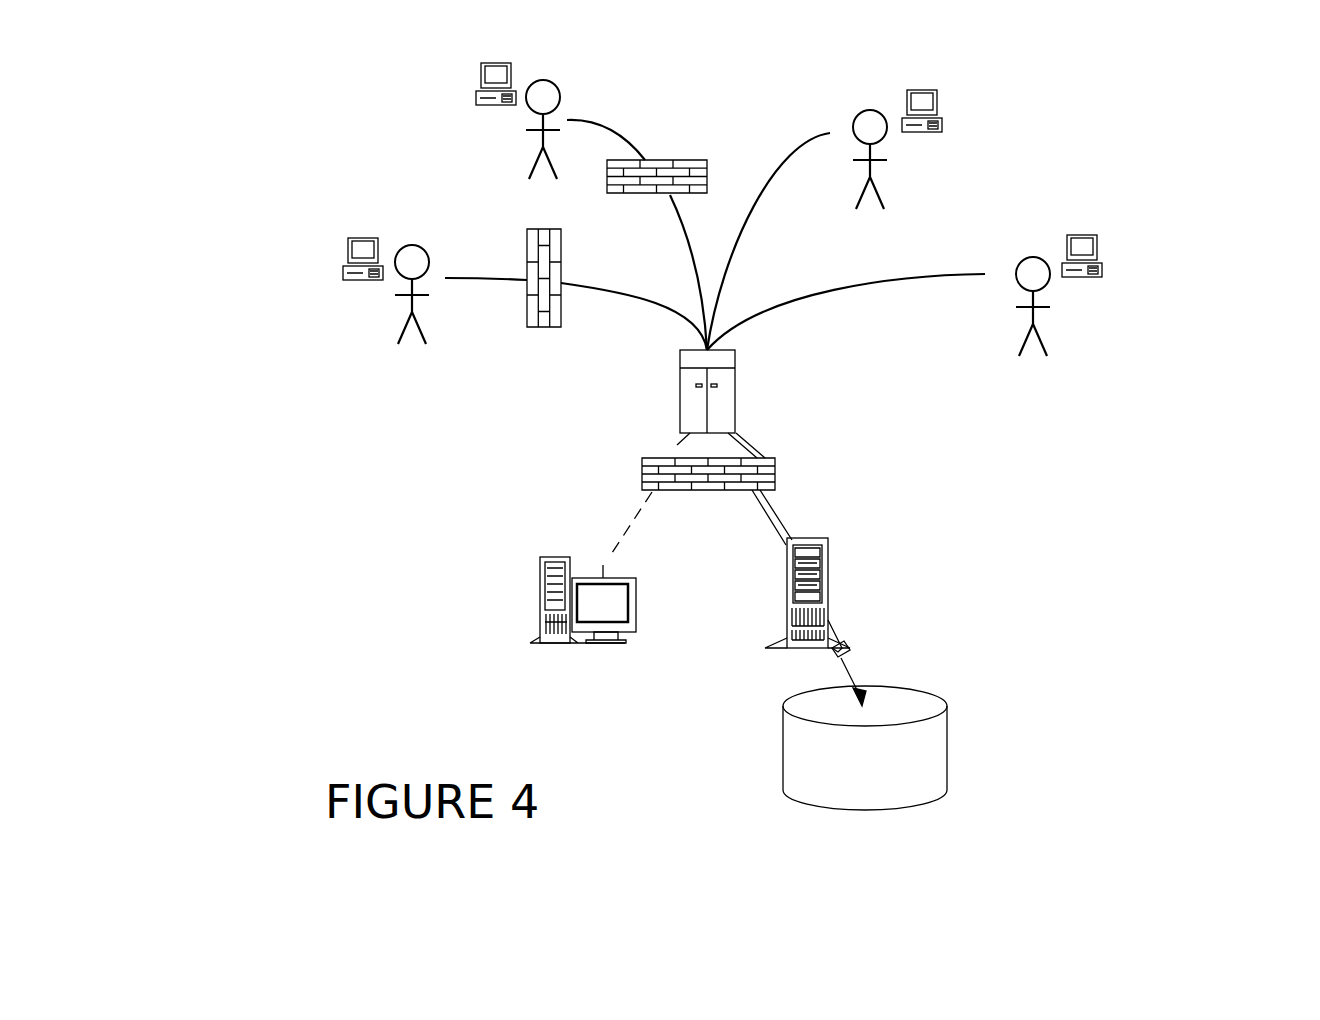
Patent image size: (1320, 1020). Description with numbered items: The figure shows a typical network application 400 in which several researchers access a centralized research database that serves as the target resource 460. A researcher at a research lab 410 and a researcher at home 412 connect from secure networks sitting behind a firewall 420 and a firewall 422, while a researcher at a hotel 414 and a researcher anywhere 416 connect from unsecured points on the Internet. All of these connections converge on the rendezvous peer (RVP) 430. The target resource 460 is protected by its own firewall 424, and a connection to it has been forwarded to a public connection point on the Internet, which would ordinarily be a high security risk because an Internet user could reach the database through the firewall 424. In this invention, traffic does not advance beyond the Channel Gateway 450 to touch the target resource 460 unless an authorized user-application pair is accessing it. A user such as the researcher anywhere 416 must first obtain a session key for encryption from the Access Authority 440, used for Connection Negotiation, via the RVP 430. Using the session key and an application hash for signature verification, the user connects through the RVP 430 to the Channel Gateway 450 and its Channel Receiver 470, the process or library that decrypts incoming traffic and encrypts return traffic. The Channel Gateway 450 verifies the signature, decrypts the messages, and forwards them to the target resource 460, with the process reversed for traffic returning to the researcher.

The network application 400 is at (188, 75).
The researcher at research lab 410 is at (320, 390).
The researcher at home 412 is at (300, 120).
The researcher at hotel 414 is at (1130, 110).
The researcher anywhere 416 is at (1150, 352).
The firewall 420 is at (567, 314).
The firewall 422 is at (677, 152).
The firewall 424 is at (778, 476).
The rendezvous peer (RVP) 430 is at (740, 403).
The Access Authority 440 is at (522, 618).
The Channel Gateway 450 is at (837, 588).
The target resource 460 is at (955, 770).
The Channel Receiver 470 is at (1100, 655).